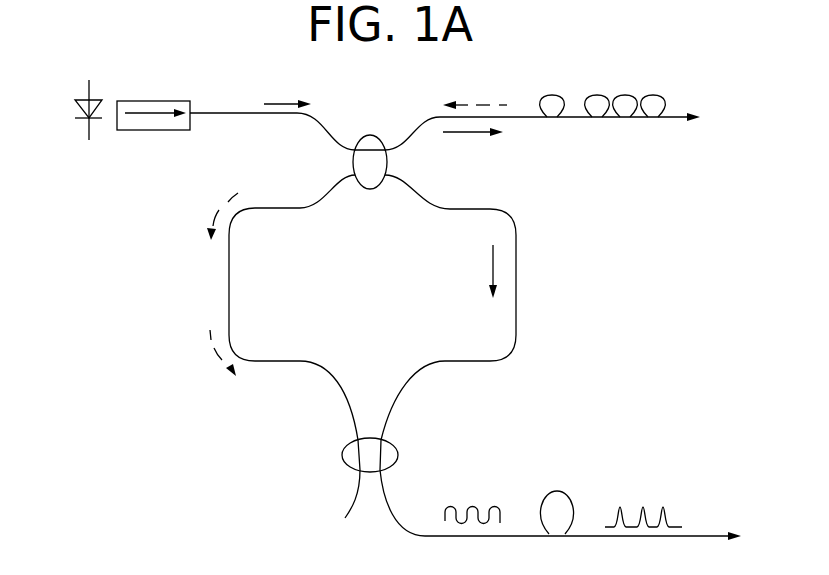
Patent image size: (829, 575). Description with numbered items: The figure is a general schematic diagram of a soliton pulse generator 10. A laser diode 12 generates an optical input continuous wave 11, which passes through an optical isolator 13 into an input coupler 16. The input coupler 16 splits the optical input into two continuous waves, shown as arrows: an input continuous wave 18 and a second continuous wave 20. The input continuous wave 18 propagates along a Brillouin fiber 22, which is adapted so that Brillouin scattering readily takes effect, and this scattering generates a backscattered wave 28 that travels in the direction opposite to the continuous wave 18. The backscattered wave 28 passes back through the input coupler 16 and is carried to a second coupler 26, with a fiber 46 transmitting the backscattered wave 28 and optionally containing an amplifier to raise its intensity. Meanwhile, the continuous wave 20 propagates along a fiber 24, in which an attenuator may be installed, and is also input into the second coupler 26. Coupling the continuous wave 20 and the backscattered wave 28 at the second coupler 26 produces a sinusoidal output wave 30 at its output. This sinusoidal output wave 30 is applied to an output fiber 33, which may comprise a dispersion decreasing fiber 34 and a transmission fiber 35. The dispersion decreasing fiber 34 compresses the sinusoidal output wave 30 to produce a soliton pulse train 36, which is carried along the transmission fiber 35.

The soliton pulse generator 10 is at (138, 78).
The optical input continuous wave 11 is at (273, 103).
The laser diode 12 is at (88, 81).
The optical isolator 13 is at (148, 101).
The input coupler 16 is at (370, 187).
The input continuous wave 18 is at (465, 135).
The continuous wave 20 is at (490, 258).
The Brillouin fiber 22 is at (568, 115).
The fiber 24 is at (517, 285).
The second coupler 26 is at (395, 443).
The backscattered wave 28 is at (488, 103).
The sinusoidal output wave 30 is at (473, 505).
The output fiber 33 is at (506, 544).
The dispersion decreasing fiber 34 is at (562, 493).
The transmission fiber 35 is at (677, 538).
The soliton pulse train 36 is at (643, 508).
The fiber 46 is at (270, 362).